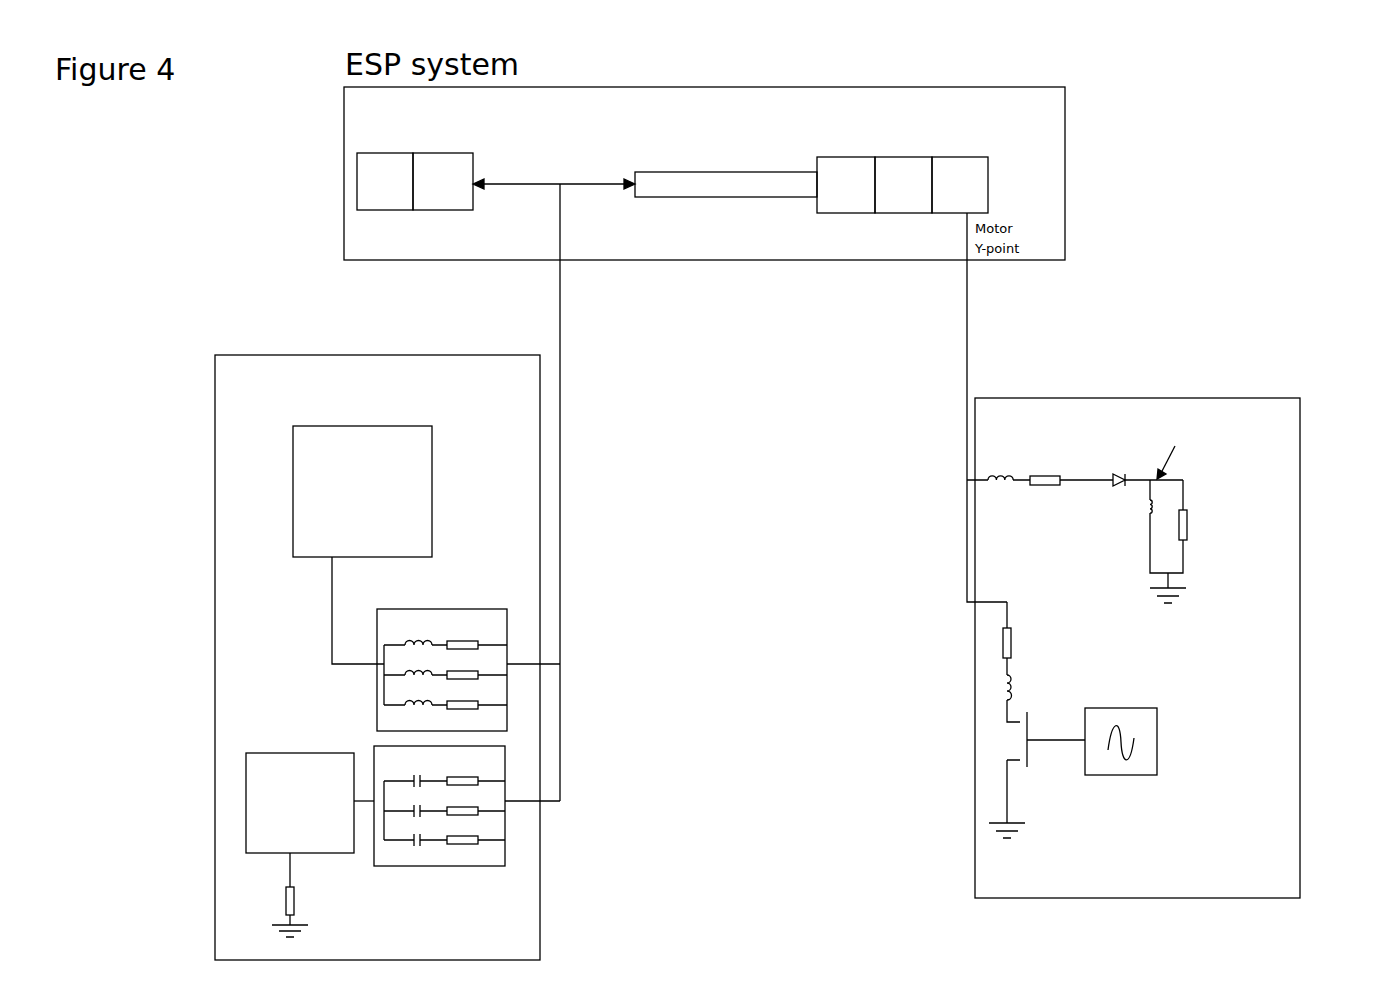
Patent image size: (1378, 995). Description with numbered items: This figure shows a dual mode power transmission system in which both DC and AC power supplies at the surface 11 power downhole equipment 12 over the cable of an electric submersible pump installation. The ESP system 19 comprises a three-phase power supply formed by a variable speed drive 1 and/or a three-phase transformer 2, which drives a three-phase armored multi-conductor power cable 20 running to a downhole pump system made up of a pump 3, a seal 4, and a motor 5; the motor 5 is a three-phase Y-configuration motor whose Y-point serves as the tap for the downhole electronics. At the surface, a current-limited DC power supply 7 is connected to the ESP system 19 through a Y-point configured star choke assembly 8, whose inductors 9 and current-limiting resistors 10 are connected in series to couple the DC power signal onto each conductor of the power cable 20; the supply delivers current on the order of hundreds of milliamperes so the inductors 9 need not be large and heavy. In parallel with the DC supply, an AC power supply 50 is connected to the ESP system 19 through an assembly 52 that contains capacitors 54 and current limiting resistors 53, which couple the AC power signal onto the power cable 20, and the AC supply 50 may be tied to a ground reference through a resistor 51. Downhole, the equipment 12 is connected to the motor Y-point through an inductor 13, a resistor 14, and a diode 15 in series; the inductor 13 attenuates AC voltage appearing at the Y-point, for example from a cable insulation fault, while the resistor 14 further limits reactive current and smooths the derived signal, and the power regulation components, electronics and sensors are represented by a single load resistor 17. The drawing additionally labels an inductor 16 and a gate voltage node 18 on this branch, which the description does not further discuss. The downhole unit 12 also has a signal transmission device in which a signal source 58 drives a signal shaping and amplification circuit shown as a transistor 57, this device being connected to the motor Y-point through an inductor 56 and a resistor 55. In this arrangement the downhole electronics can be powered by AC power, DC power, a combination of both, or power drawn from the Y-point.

The variable speed drive 1 is at (357, 170).
The three-phase transformer 2 is at (436, 152).
The pump 3 is at (838, 157).
The seal 4 is at (900, 157).
The motor 5 is at (957, 157).
The DC power supply 7 is at (293, 498).
The star choke assembly 8 is at (377, 723).
The inductors 9 is at (418, 638).
The current-limiting resistors 10 is at (460, 640).
The surface 11 is at (215, 585).
The downhole equipment 12 is at (975, 880).
The inductor 13 is at (1010, 470).
The resistor 14 is at (1040, 472).
The diode 15 is at (1113, 478).
The gate inductor 16 is at (1157, 503).
The load resistor 17 is at (1188, 525).
The gate voltage Vg 18 is at (1198, 440).
The ESP system 19 is at (344, 224).
The multi-conductor power cable 20 is at (713, 172).
The AC power supply 50 is at (246, 803).
The resistor 51 is at (286, 895).
The assembly 52 is at (505, 776).
The current limiting resistors 53 is at (470, 843).
The capacitors 54 is at (420, 855).
The resistor 55 is at (1003, 645).
The inductor 56 is at (1003, 688).
The transistor 57 is at (1012, 745).
The signal source 58 is at (1157, 734).